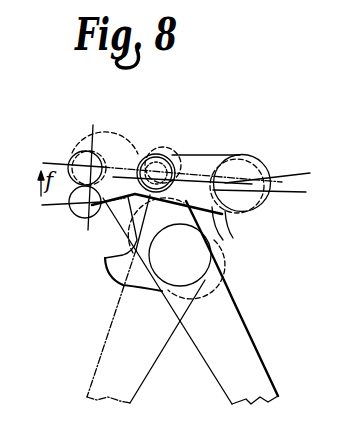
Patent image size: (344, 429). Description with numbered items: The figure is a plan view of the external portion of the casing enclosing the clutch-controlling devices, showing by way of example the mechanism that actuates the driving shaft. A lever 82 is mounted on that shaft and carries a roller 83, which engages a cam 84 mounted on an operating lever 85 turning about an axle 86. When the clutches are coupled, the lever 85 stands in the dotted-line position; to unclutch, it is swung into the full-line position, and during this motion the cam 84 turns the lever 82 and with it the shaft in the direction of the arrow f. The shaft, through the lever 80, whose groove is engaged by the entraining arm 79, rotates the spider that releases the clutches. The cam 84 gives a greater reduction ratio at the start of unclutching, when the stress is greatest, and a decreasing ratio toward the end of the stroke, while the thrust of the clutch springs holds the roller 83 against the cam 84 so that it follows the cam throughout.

The entraining arm 79 is at (82, 155).
The lever 80 is at (133, 159).
The lever 82 is at (207, 165).
The roller 83 is at (180, 164).
The cam 84 is at (115, 262).
The operating lever 85 is at (117, 342).
The axle 86 is at (195, 263).